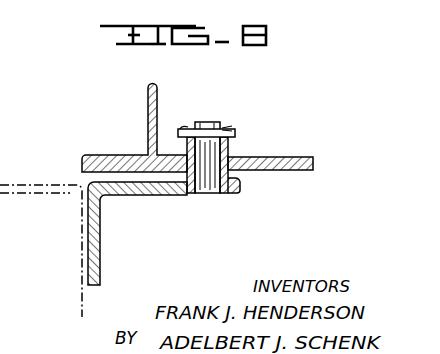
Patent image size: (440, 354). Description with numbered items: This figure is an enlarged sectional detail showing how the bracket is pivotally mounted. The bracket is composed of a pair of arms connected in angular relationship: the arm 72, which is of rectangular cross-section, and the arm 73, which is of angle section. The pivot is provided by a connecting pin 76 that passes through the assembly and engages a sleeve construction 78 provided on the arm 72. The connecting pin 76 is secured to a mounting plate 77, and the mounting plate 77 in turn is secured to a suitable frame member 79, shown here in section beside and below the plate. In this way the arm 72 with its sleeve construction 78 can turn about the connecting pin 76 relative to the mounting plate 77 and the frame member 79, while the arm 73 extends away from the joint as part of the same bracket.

The arm 72 is at (270, 157).
The arm 73 is at (157, 116).
The connecting pin 76 is at (206, 122).
The mounting plate 77 is at (140, 196).
The sleeve construction 78 is at (228, 151).
The frame member 79 is at (82, 212).